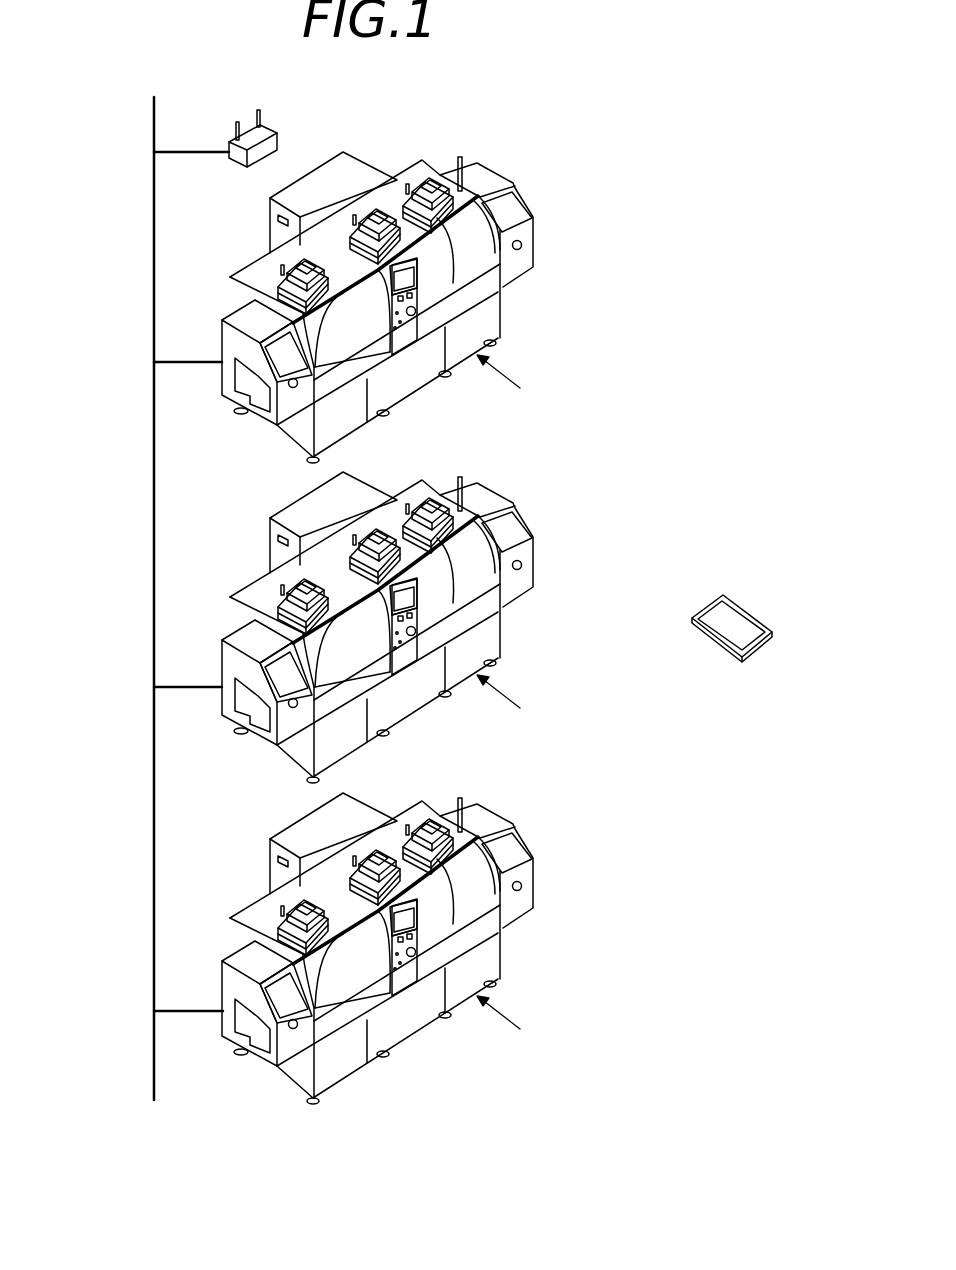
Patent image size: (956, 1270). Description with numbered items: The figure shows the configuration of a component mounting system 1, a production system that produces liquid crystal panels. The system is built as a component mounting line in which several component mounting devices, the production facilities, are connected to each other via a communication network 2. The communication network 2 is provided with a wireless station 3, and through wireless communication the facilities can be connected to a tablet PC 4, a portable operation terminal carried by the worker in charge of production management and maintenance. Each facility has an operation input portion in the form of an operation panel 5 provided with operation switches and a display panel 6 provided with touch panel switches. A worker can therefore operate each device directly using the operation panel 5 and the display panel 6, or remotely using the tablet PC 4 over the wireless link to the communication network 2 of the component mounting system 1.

The component mounting system 1 is at (520, 112).
The communication network 2 is at (153, 502).
The wireless station 3 is at (277, 133).
The tablet PC 4 is at (752, 612).
The operation panel 5 is at (412, 332).
The display panel 6 is at (410, 275).